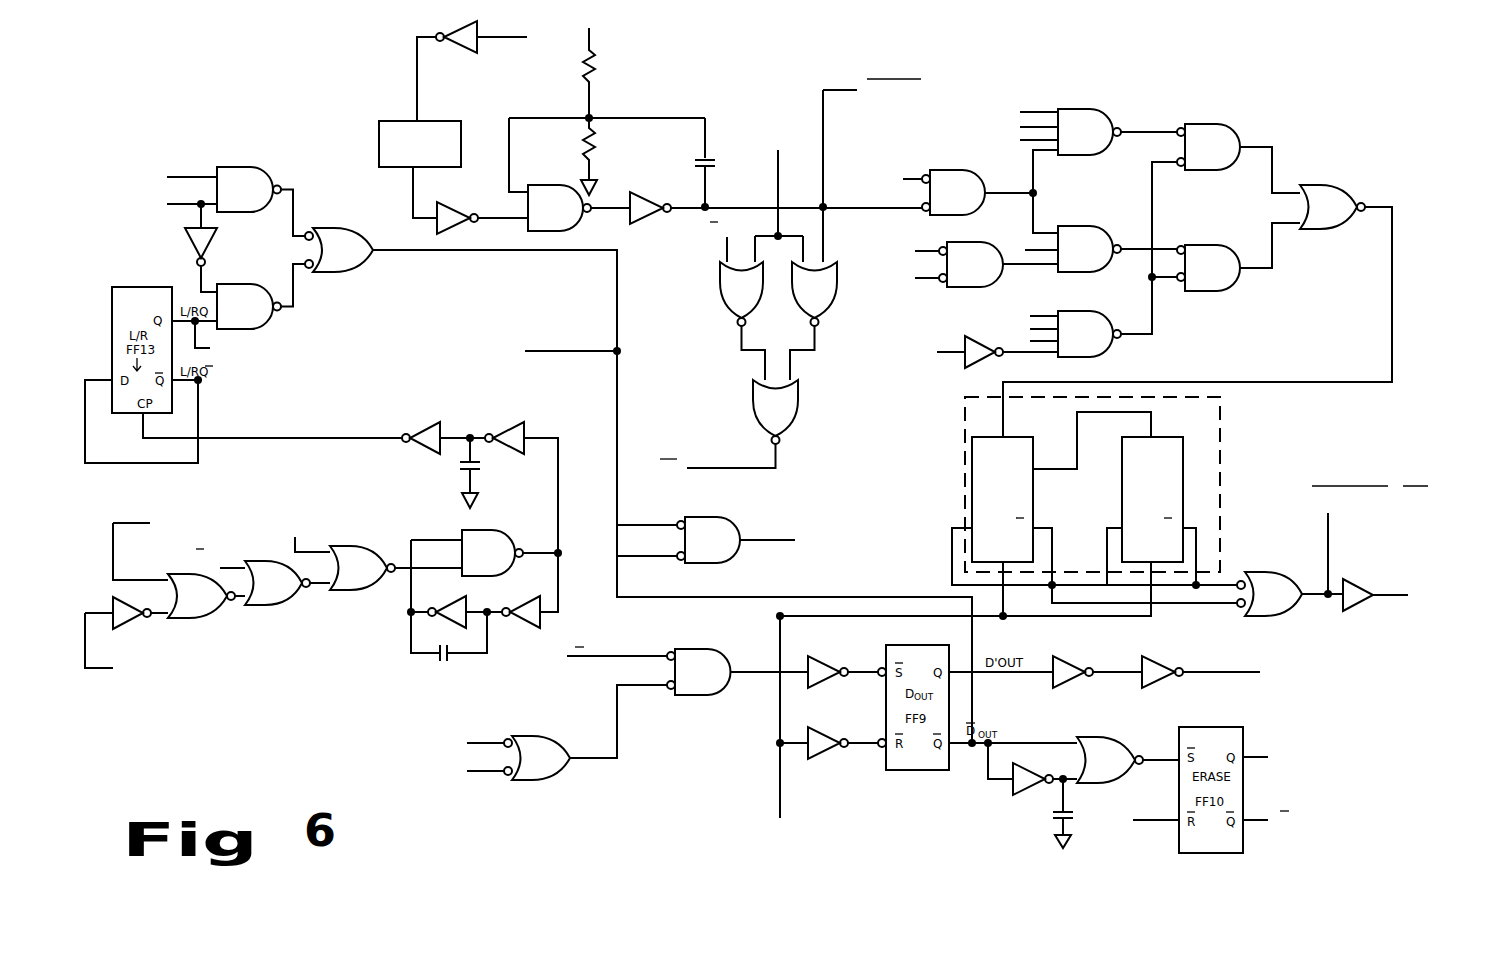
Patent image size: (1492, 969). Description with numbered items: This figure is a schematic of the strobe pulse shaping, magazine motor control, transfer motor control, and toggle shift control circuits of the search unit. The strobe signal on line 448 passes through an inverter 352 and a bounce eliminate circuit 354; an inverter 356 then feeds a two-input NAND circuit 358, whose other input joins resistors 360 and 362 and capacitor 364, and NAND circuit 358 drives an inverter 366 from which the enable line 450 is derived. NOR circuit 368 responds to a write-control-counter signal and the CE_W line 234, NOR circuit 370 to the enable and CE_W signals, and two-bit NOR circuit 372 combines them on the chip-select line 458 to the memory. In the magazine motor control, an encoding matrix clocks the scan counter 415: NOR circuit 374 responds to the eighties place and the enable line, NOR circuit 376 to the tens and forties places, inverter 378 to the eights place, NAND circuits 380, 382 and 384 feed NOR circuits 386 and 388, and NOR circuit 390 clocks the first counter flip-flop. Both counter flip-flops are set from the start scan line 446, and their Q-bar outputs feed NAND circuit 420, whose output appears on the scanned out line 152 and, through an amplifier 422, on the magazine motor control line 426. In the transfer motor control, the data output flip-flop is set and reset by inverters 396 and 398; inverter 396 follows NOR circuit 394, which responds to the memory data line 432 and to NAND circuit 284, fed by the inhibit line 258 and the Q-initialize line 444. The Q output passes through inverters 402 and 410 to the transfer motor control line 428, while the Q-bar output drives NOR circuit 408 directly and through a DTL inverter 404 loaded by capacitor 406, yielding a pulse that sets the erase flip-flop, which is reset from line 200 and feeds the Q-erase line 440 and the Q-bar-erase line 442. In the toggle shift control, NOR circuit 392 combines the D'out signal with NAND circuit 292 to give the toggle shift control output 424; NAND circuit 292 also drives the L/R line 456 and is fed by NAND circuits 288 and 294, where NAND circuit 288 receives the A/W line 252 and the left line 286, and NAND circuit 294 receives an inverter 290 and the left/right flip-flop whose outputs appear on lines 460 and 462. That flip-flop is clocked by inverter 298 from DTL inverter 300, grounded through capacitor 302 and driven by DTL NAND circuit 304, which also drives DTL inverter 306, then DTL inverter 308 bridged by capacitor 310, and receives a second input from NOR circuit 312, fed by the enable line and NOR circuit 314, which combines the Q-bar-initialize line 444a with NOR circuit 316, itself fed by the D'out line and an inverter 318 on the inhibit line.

The scanned out line 152 is at (1328, 540).
The R_s line 200 is at (1150, 820).
The CE write clock line 234 is at (778, 200).
The A/W line 252 is at (175, 204).
The inhibit line 258 is at (105, 668).
The NAND circuit 284 is at (560, 782).
The left line 286 is at (192, 177).
The NAND circuit 288 is at (265, 167).
The inverter 290 is at (210, 243).
The NAND circuit 292 is at (350, 272).
The NAND circuit 294 is at (262, 329).
The inverter 298 is at (430, 422).
The DTL inverter 300 is at (515, 422).
The capacitor 302 is at (480, 464).
The DTL NAND circuit 304 is at (530, 522).
The DTL inverter 306 is at (540, 624).
The DTL inverter 308 is at (462, 598).
The capacitor 310 is at (436, 660).
The NOR circuit 312 is at (345, 590).
The NOR circuit 314 is at (275, 605).
The NOR circuit 316 is at (205, 620).
The inverter 318 is at (125, 625).
The inverter 352 is at (475, 50).
The bounce eliminate circuit 354 is at (379, 130).
The inverter 356 is at (470, 196).
The NAND circuit 358 is at (545, 185).
The resistor 360 is at (596, 70).
The resistor 362 is at (596, 150).
The capacitor 364 is at (712, 160).
The inverter 366 is at (645, 194).
The NOR circuit 368 is at (720, 290).
The NOR circuit 370 is at (837, 290).
The NOR circuit 372 is at (800, 400).
The NOR circuit 374 is at (945, 170).
The NOR circuit 376 is at (960, 288).
The inverter 378 is at (975, 368).
The NAND circuit 380 is at (1098, 109).
The NAND circuit 382 is at (1095, 226).
The NAND circuit 384 is at (1105, 310).
The NOR circuit 386 is at (1222, 124).
The NOR circuit 388 is at (1218, 291).
The NOR circuit 390 is at (1335, 185).
The NOR circuit 392 is at (712, 517).
The NOR circuit 394 is at (700, 695).
The inverter 396 is at (820, 660).
The inverter 398 is at (820, 733).
The inverter 402 is at (1075, 663).
The DTL inverter 404 is at (1022, 793).
The capacitor 406 is at (1050, 820).
The NOR circuit 408 is at (1130, 730).
The inverter 410 is at (1165, 661).
The scan counter 415 is at (1222, 483).
The NAND circuit 420 is at (1270, 572).
The amplifier 422 is at (1355, 611).
The L/R toggle shift control line 424 is at (770, 540).
The magazine motor control line 426 is at (1385, 594).
The transfer motor control line 428 is at (1228, 672).
The D out bar line 432 is at (590, 656).
The Q_erase line 440 is at (1258, 757).
The Q-bar_erase line 442 is at (1260, 820).
The Q_initialize line 444 is at (480, 771).
The Q-bar_initialize line 444a is at (240, 568).
The start scan line 446 is at (780, 808).
The strobe line 448 is at (505, 37).
The enable line 450 is at (823, 166).
The L/R line 456 is at (555, 351).
The CS bar line 458 is at (710, 468).
The L/R Q line 460 is at (210, 348).
The L/R Q-bar line 462 is at (205, 380).